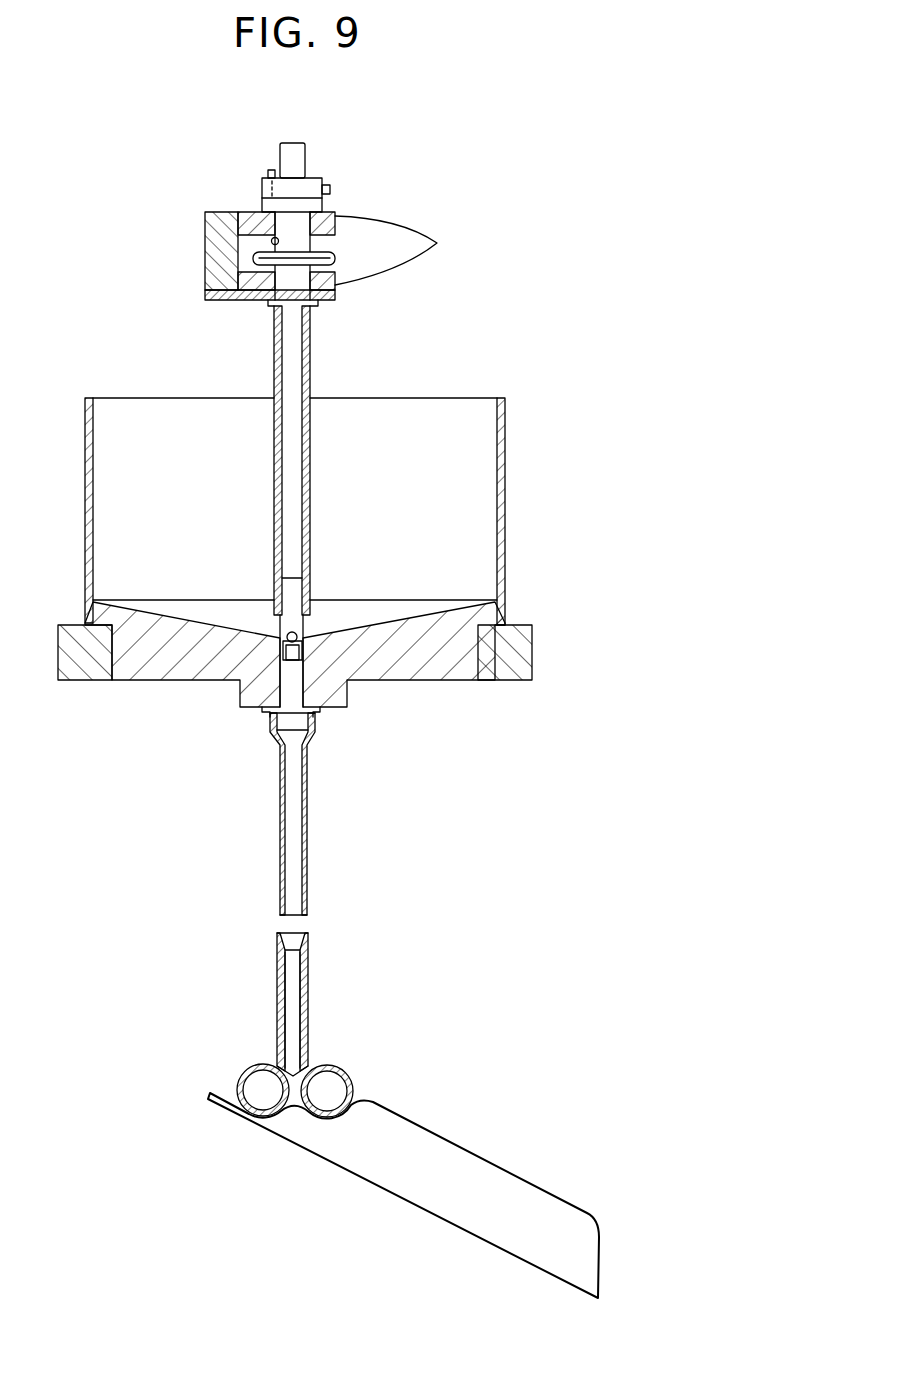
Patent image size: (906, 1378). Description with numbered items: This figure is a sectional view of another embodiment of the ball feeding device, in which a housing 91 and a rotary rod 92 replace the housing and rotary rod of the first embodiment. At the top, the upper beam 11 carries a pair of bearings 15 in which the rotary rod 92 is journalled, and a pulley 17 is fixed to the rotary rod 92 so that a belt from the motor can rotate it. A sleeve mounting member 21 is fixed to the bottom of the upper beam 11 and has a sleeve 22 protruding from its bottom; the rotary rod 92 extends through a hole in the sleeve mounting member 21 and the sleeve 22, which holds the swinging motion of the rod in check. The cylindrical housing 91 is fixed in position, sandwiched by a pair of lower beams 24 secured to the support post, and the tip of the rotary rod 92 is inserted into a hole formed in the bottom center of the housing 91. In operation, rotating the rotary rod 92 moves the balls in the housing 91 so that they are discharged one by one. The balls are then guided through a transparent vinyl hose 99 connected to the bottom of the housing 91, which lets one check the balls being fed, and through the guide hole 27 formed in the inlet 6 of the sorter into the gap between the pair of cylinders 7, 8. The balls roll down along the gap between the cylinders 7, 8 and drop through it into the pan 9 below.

The rotary rod 92 is at (300, 151).
The upper beam 11 is at (207, 212).
The pulley 17 is at (332, 250).
The bearings 15 is at (437, 243).
The sleeve mounting member 21 is at (226, 302).
The sleeve 22 is at (272, 370).
The housing 91 is at (85, 474).
The lower beams 24 is at (506, 703).
The vinyl hose 99 is at (312, 825).
The guide hole 27 is at (276, 972).
The inlet 6 is at (310, 997).
The cylinder 8 is at (243, 1070).
The cylinder 7 is at (352, 1078).
The pan 9 is at (500, 1165).